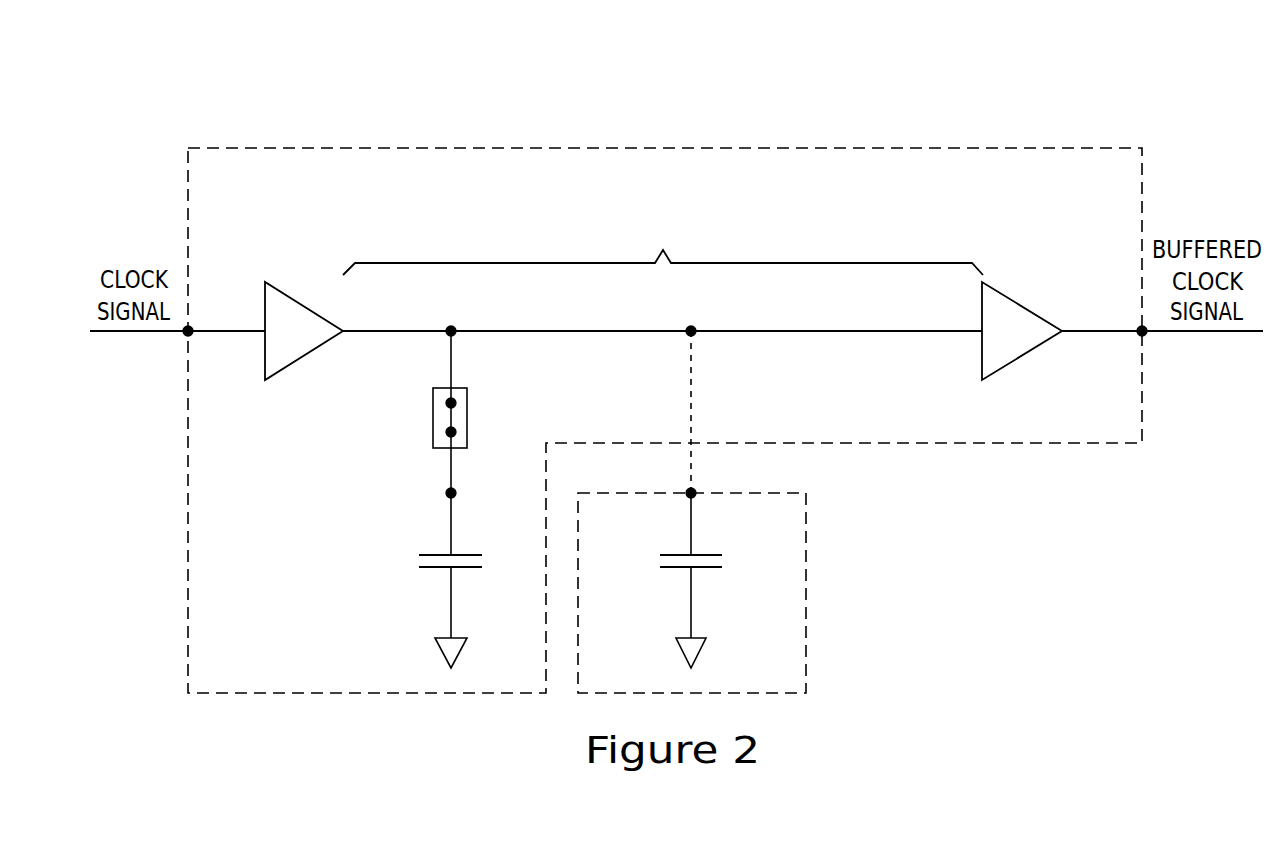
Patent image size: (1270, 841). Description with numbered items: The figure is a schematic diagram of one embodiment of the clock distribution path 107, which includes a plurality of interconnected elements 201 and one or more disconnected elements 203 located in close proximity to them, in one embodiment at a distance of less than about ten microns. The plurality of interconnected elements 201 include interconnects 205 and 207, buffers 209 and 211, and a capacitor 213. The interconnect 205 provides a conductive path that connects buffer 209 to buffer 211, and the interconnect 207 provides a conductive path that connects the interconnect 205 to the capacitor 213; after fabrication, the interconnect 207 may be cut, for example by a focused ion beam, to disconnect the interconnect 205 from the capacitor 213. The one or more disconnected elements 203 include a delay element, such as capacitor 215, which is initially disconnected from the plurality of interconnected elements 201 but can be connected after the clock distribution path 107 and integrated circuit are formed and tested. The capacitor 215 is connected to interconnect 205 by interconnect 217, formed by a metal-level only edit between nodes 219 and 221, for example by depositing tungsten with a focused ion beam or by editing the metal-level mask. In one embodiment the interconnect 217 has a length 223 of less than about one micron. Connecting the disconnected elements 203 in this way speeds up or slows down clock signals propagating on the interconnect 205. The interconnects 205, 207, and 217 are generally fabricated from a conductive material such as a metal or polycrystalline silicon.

The clock distribution path 107 is at (1084, 98).
The plurality of interconnected elements 201 is at (948, 148).
The disconnected elements 203 is at (806, 593).
The interconnect 205 is at (663, 250).
The interconnect 207 is at (425, 338).
The buffer 209 is at (305, 356).
The buffer 211 is at (1022, 356).
The capacitor 213 is at (440, 569).
The capacitor 215 is at (678, 569).
The interconnect 217 is at (714, 338).
The node 219 is at (691, 326).
The node 221 is at (696, 497).
The length 223 is at (612, 345).